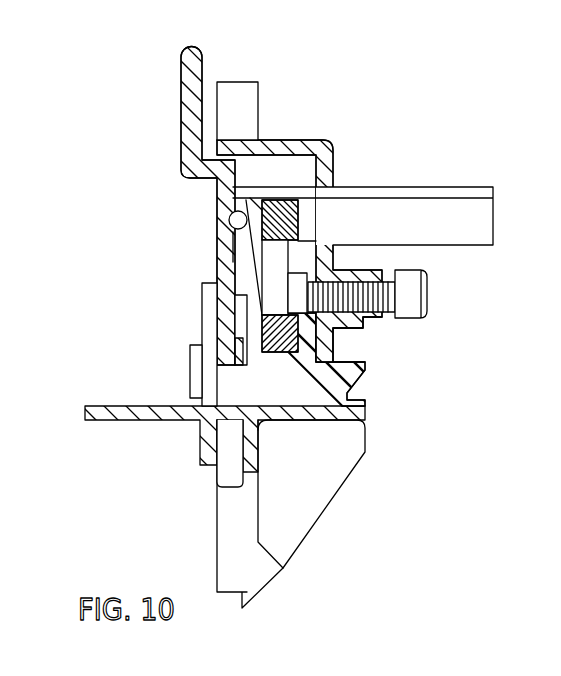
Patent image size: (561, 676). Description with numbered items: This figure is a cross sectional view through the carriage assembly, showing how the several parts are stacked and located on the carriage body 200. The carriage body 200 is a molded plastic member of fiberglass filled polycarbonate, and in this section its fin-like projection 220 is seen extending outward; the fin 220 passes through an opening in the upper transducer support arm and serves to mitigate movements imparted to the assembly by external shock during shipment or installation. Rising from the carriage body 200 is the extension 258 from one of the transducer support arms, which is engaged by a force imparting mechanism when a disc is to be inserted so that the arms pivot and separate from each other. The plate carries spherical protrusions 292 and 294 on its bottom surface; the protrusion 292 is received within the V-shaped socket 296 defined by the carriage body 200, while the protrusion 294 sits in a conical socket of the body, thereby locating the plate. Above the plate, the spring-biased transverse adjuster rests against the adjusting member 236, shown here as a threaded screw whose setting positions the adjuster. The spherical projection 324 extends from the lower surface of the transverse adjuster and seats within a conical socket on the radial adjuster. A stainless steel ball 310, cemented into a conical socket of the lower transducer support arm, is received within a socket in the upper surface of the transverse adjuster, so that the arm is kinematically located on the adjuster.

The carriage body 200 is at (332, 383).
The fin-like projection 220 is at (158, 418).
The adjusting member 236 is at (410, 294).
The extension 258 is at (192, 58).
The spherical protrusion 292 is at (272, 352).
The spherical protrusion 294 is at (300, 220).
The V-shaped socket 296 is at (340, 345).
The ball 310 is at (228, 220).
The spherical projection 324 is at (256, 212).